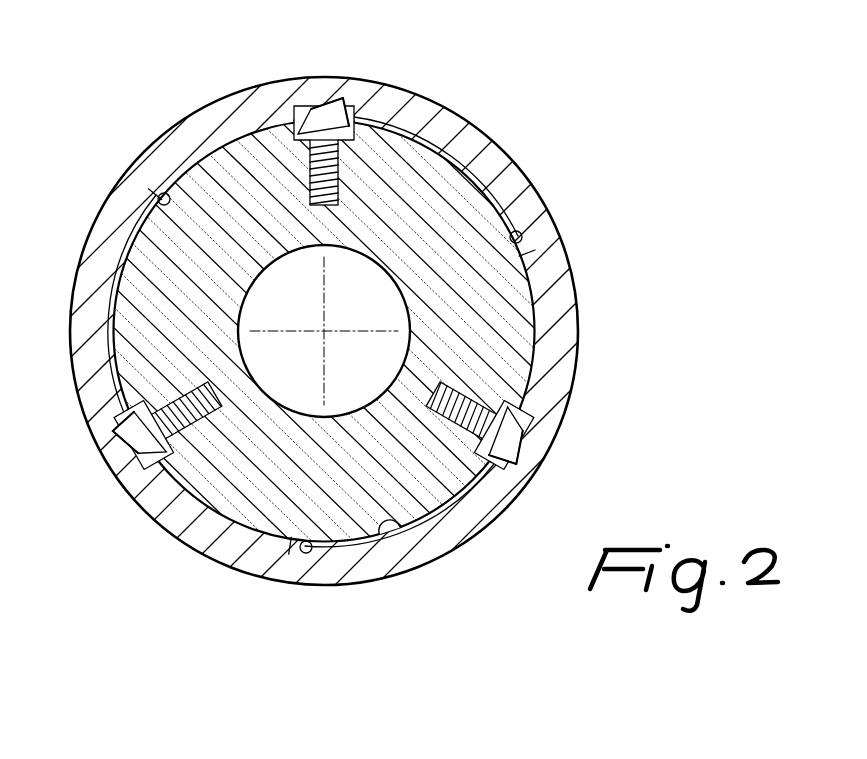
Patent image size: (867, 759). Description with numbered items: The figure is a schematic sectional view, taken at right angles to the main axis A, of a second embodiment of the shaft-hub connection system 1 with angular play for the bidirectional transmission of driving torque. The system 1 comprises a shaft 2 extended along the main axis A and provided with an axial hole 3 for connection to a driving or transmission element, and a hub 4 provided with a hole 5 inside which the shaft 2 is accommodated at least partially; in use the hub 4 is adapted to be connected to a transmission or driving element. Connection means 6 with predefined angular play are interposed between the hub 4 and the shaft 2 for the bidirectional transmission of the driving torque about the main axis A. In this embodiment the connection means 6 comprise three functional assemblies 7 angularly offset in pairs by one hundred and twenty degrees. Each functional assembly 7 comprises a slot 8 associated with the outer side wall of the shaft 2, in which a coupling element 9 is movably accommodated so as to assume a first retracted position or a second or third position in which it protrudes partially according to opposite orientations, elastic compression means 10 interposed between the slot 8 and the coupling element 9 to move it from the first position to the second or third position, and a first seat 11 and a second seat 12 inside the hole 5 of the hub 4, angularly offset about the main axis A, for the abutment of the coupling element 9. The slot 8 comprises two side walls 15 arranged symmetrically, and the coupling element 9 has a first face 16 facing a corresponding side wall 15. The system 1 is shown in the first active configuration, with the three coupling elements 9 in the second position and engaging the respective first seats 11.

The shaft-hub connection system 1 is at (433, 379).
The shaft 2 is at (460, 203).
The axial hole 3 is at (344, 402).
The hub 4 is at (585, 318).
The hole 5 is at (400, 530).
The connection means 6 is at (433, 379).
The functional assembly 7 is at (302, 106).
The slot 8 is at (349, 114).
The coupling element 9 is at (342, 102).
The elastic compression means 10 is at (340, 184).
The first seat 11 is at (336, 104).
The second seat 12 is at (152, 194).
The side walls 15 is at (296, 138).
The first face 16 is at (298, 104).
The main axis A is at (345, 325).